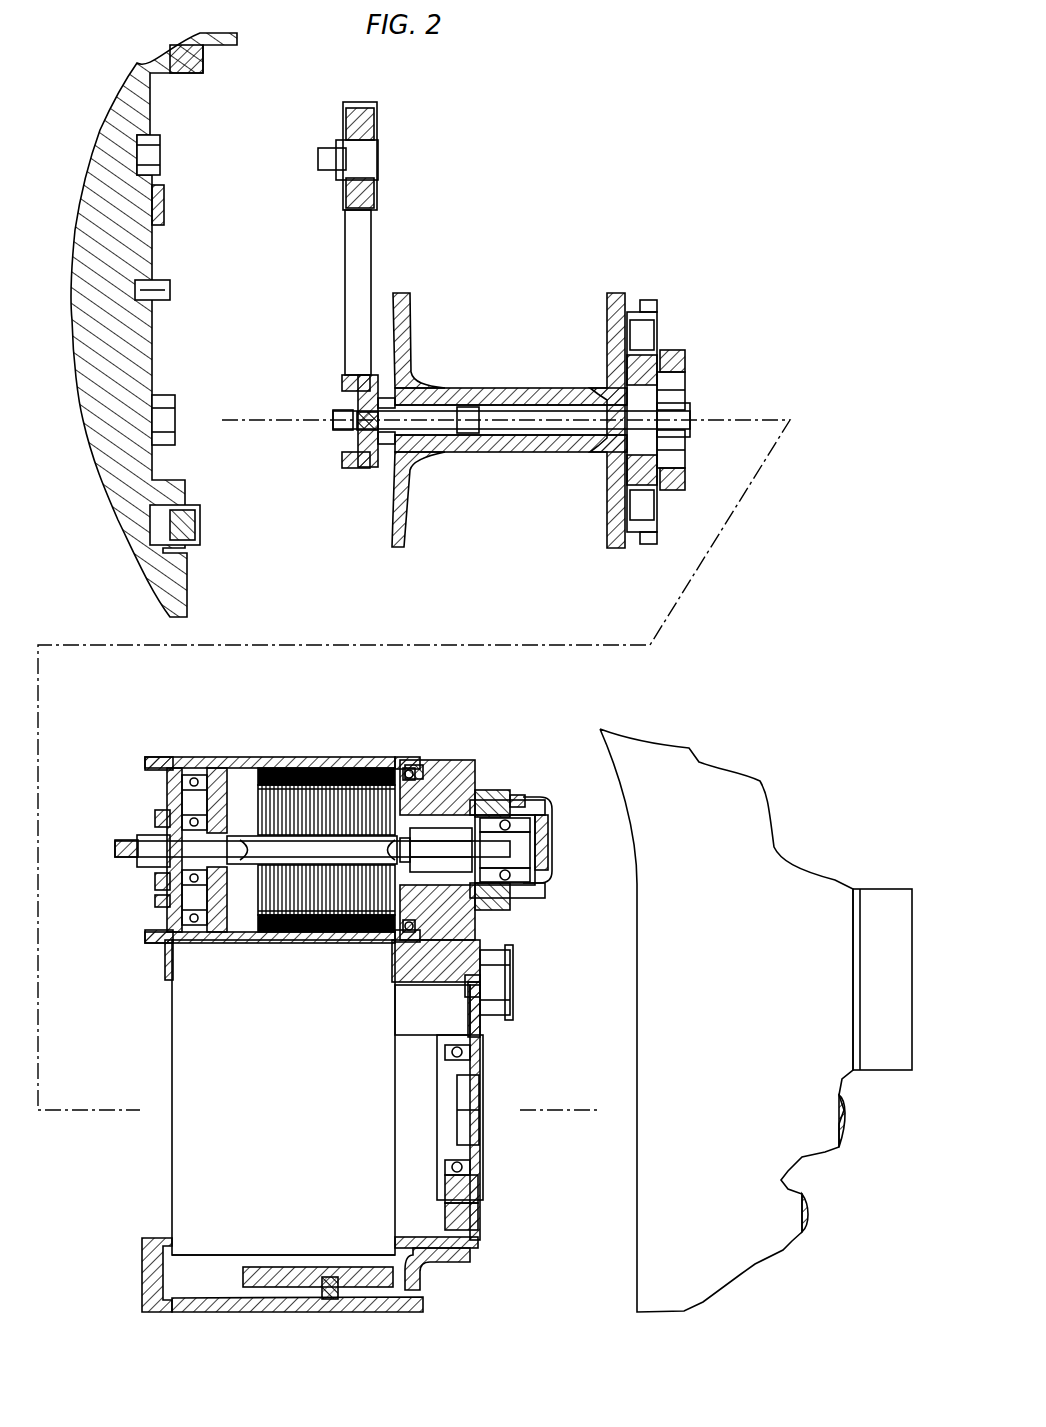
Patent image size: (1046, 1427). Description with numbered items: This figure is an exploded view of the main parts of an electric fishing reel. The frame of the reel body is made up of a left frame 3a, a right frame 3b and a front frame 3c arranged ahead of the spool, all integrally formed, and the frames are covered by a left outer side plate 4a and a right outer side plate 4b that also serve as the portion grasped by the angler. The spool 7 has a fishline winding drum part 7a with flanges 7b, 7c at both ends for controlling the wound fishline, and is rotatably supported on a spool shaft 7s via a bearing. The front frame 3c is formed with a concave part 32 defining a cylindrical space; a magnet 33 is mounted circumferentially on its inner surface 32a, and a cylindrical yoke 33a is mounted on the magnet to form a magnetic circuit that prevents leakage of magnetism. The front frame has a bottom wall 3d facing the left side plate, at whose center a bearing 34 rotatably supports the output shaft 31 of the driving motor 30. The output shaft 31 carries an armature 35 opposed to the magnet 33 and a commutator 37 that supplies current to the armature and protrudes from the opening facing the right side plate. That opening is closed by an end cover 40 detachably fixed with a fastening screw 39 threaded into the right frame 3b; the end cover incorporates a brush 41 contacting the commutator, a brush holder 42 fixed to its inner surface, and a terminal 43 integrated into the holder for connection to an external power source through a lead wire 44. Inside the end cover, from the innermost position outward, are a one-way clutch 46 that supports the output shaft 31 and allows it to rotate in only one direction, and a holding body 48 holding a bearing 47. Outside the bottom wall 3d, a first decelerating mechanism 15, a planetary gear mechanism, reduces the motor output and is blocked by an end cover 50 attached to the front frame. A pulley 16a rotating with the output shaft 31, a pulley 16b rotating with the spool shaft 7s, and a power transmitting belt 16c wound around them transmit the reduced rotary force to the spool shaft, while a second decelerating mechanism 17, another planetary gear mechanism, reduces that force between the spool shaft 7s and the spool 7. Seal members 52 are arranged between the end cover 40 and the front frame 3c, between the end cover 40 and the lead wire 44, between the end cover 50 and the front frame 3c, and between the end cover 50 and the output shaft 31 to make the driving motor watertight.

The left frame 3a is at (165, 1240).
The right frame 3b is at (480, 1240).
The front frame 3c is at (210, 770).
The bottom wall 3d is at (230, 770).
The left outer side plate 4a is at (90, 440).
The right outer side plate 4b is at (718, 765).
The spool 7 is at (517, 388).
The fishline winding drum part 7a is at (552, 455).
The flange 7b is at (412, 322).
The flange 7c is at (607, 320).
The spool shaft 7s is at (505, 430).
The first decelerating mechanism 15 is at (160, 796).
The pulley 16a is at (345, 120).
The pulley 16b is at (345, 455).
The power transmitting belt 16c is at (348, 290).
The second decelerating mechanism 17 is at (672, 360).
The driving motor 30 is at (377, 752).
The output shaft 31 is at (140, 838).
The concave part 32 is at (262, 768).
The inner surface 32a is at (305, 768).
The magnet 33 is at (290, 932).
The cylindrical yoke 33a is at (335, 770).
The bearing 34 is at (185, 780).
The armature 35 is at (430, 765).
The commutator 37 is at (370, 940).
The fastening screw 39 is at (500, 975).
The end cover 40 is at (475, 772).
The brush 41 is at (480, 925).
The brush holder 42 is at (455, 765).
The terminal 43 is at (490, 772).
The lead wire 44 is at (535, 895).
The one-way clutch 46 is at (495, 790).
The bearing 47 is at (520, 830).
The holding body 48 is at (552, 840).
The end cover 50 is at (165, 760).
The seal member 52 is at (415, 765).